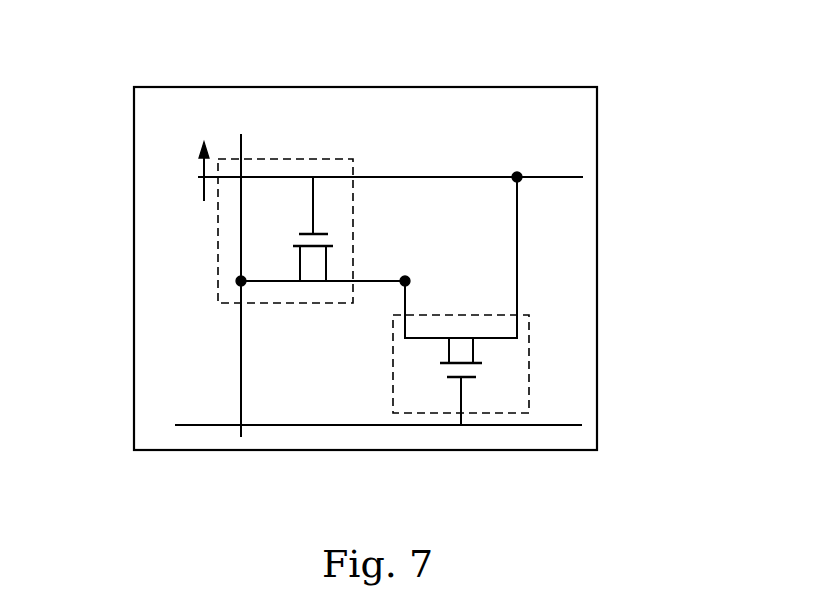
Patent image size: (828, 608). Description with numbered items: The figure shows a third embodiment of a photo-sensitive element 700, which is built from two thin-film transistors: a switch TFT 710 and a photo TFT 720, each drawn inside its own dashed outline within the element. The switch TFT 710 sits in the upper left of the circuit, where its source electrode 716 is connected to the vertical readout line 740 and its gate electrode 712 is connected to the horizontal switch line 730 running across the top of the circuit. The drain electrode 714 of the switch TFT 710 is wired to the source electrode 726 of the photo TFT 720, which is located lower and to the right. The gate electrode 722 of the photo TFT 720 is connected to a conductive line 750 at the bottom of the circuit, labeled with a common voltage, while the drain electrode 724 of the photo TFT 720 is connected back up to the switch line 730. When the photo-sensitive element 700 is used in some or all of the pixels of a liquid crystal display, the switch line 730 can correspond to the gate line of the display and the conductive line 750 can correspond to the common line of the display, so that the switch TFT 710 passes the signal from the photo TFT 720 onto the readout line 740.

The photo-sensitive element 700 is at (388, 119).
The switch TFT 710 is at (285, 159).
The gate electrode of the switch TFT 712 is at (313, 196).
The drain electrode of the switch TFT 714 is at (333, 263).
The source electrode of the switch TFT 716 is at (300, 262).
The photo TFT 720 is at (529, 331).
The gate electrode of the photo TFT 722 is at (465, 399).
The drain electrode of the photo TFT 724 is at (483, 350).
The source electrode of the photo TFT 726 is at (448, 350).
The switch line 730 is at (565, 176).
The readout line 740 is at (241, 375).
The conductive line 750 is at (534, 426).